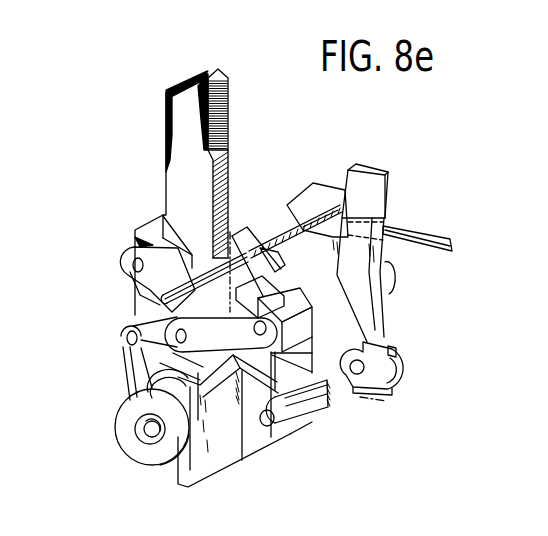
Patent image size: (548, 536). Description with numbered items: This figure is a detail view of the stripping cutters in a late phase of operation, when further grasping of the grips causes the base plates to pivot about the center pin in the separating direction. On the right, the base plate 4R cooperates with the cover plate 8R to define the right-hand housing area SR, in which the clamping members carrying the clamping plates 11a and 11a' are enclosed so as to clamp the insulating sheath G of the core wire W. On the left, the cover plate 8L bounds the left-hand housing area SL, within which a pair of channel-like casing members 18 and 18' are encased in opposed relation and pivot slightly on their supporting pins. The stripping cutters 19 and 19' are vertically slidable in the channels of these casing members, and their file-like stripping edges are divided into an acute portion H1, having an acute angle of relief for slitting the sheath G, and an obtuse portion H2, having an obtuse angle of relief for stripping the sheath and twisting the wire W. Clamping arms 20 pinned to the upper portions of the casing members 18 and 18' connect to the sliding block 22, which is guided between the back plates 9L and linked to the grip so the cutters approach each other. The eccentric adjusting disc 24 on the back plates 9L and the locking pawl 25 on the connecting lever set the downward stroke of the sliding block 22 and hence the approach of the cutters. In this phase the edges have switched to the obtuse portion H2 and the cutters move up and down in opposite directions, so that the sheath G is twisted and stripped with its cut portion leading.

The stripping cutter 19 is at (168, 154).
The acute portion H1 is at (230, 93).
The obtuse portion H2 is at (229, 160).
The casing member 18 is at (144, 246).
The clamping arm 20 is at (130, 252).
The sliding block 22 is at (125, 320).
The adjusting disc 24 is at (185, 488).
The locking pawl 25 is at (153, 378).
The back plates 9L is at (222, 467).
The cover plate 8L is at (252, 447).
The left-hand housing area SL is at (273, 372).
The casing member 18' is at (318, 359).
The stripping cutter 19' is at (283, 272).
The core wire W is at (273, 232).
The clamping plate 11a' is at (330, 196).
The clamping plate 11a is at (397, 191).
The insulating sheath G is at (430, 243).
The base plate 4R is at (355, 325).
The right-hand housing area SR is at (377, 334).
The cover plate 8R is at (396, 352).